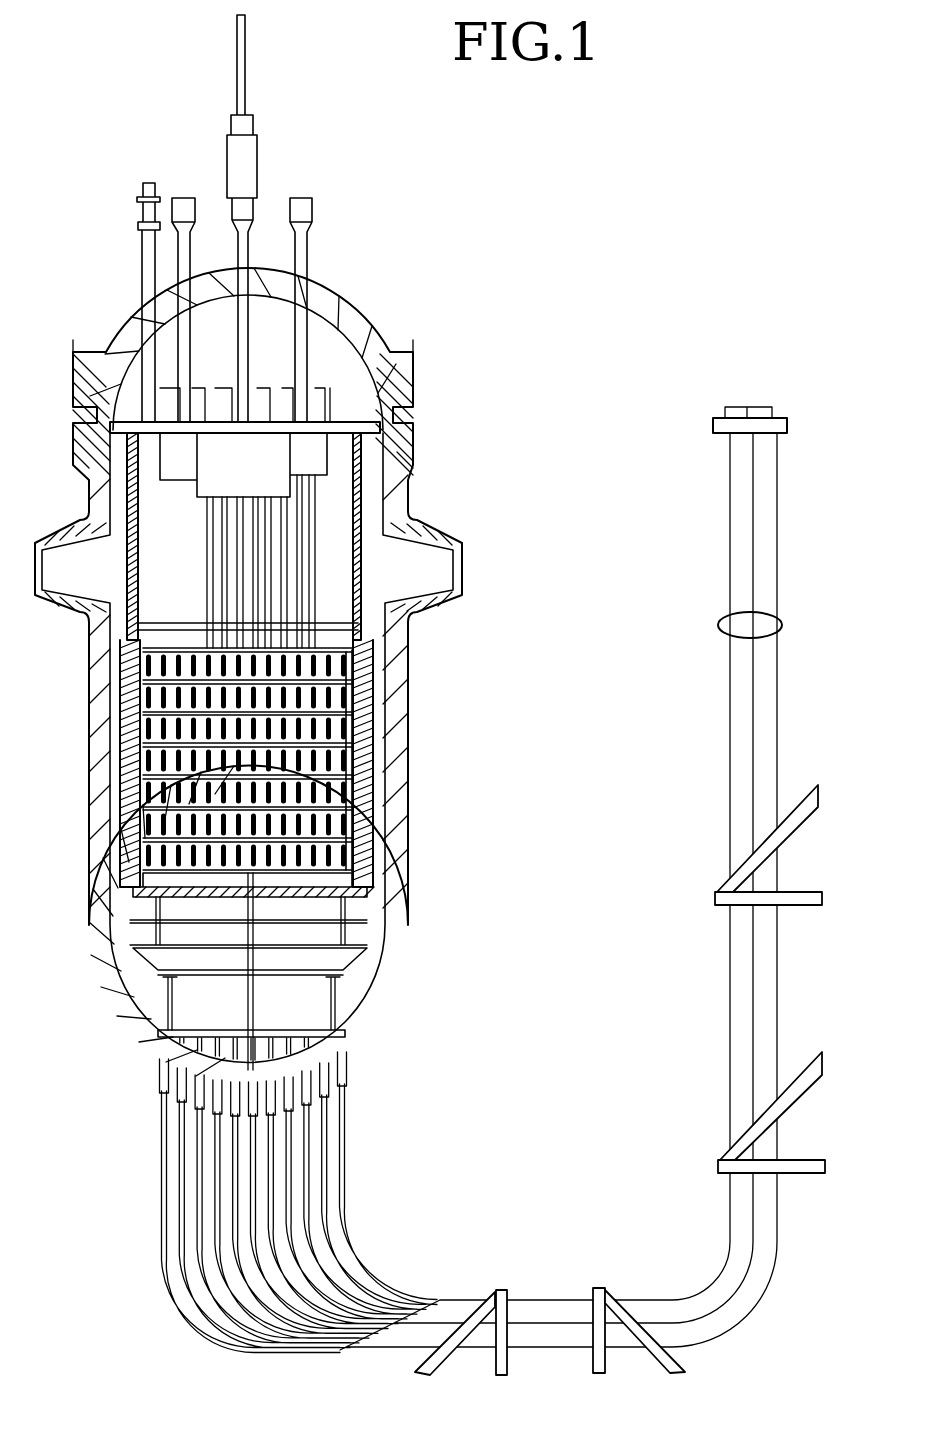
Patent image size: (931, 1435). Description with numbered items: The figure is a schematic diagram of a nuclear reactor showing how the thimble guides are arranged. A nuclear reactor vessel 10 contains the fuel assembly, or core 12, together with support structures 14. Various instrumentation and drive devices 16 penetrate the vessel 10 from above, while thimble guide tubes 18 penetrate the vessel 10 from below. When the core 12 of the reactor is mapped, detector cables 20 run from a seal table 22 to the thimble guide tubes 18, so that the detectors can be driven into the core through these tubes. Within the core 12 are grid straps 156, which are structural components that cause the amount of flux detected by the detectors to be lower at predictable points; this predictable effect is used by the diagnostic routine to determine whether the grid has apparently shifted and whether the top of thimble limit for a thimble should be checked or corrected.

The nuclear reactor vessel 10 is at (410, 755).
The fuel assembly (core) 12 is at (155, 770).
The support structures 14 is at (363, 447).
The instrumentation and drive devices 16 is at (327, 202).
The thimble guide tubes 18 is at (157, 1100).
The detector cables 20 is at (718, 628).
The seal table 22 is at (713, 425).
The grid straps 156 is at (350, 712).